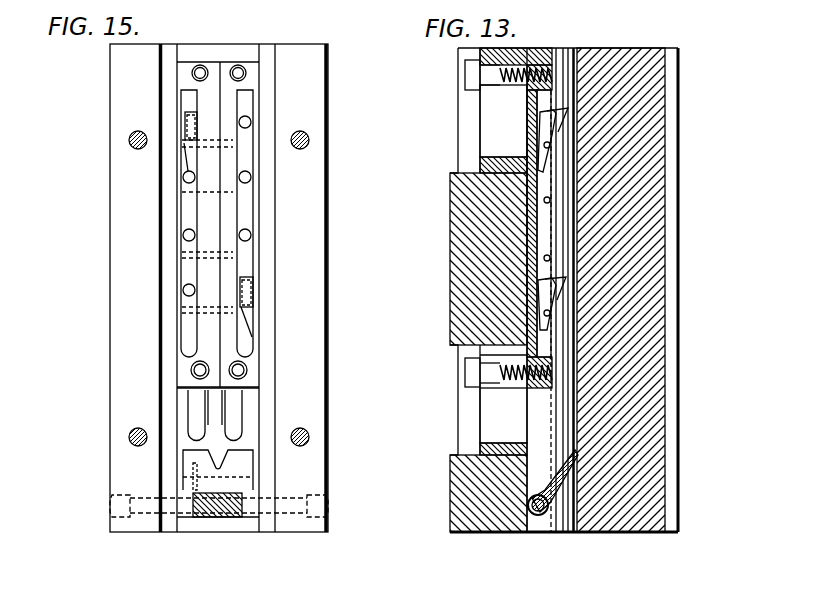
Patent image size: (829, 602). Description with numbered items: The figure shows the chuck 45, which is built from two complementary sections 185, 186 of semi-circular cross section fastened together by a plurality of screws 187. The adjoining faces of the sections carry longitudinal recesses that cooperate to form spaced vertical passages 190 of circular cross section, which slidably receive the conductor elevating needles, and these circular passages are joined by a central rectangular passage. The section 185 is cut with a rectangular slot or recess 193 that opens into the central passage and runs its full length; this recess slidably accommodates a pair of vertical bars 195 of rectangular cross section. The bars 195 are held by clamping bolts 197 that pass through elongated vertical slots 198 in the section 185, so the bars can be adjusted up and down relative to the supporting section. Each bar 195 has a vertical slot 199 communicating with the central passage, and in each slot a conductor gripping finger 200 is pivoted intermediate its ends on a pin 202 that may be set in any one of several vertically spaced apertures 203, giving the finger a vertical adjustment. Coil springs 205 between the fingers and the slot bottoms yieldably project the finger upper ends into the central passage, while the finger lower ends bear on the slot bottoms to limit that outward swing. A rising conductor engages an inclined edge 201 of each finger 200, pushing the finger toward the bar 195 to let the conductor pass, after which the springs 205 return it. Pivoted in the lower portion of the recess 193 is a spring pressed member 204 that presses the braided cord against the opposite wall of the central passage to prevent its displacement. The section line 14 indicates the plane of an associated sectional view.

In FIG. 13, the section line 14- 14 is at (470, 122).
In FIG. 15, the chuck 45 is at (108, 351).
In FIG. 13, the chuck 45 is at (450, 287).
In FIG. 15, the section 185 is at (130, 393).
In FIG. 13, the section 185 is at (467, 500).
In FIG. 13, the section 186 is at (645, 507).
In FIG. 15, the screws 187 is at (300, 148).
In FIG. 15, the vertical passages 190 is at (160, 284).
In FIG. 15, the rectangular slot or recess 193 is at (185, 439).
In FIG. 13, the rectangular slot or recess 193 is at (532, 442).
In FIG. 15, the vertical bars 195 is at (200, 94).
In FIG. 13, the vertical bars 195 is at (527, 93).
In FIG. 15, the clamping bolts 197 is at (238, 65).
In FIG. 13, the clamping bolts 197 is at (470, 70).
In FIG. 15, the elongated vertical slots 198 is at (197, 413).
In FIG. 13, the elongated vertical slots 198 is at (493, 156).
In FIG. 15, the vertical slots 199 is at (242, 212).
In FIG. 13, the vertical slots 199 is at (540, 221).
In FIG. 15, the conductor gripping finger 200 is at (185, 153).
In FIG. 13, the conductor gripping finger 200 is at (566, 133).
In FIG. 13, the inclined edge 201 is at (560, 131).
In FIG. 15, the pin 202 is at (203, 140).
In FIG. 13, the pin 202 is at (550, 144).
In FIG. 15, the vertically spaced apertures 203 is at (232, 147).
In FIG. 13, the vertically spaced apertures 203 is at (550, 258).
In FIG. 15, the spring pressed member 204 is at (193, 457).
In FIG. 13, the spring pressed member 204 is at (562, 483).
In FIG. 13, the coil springs 205 is at (533, 137).